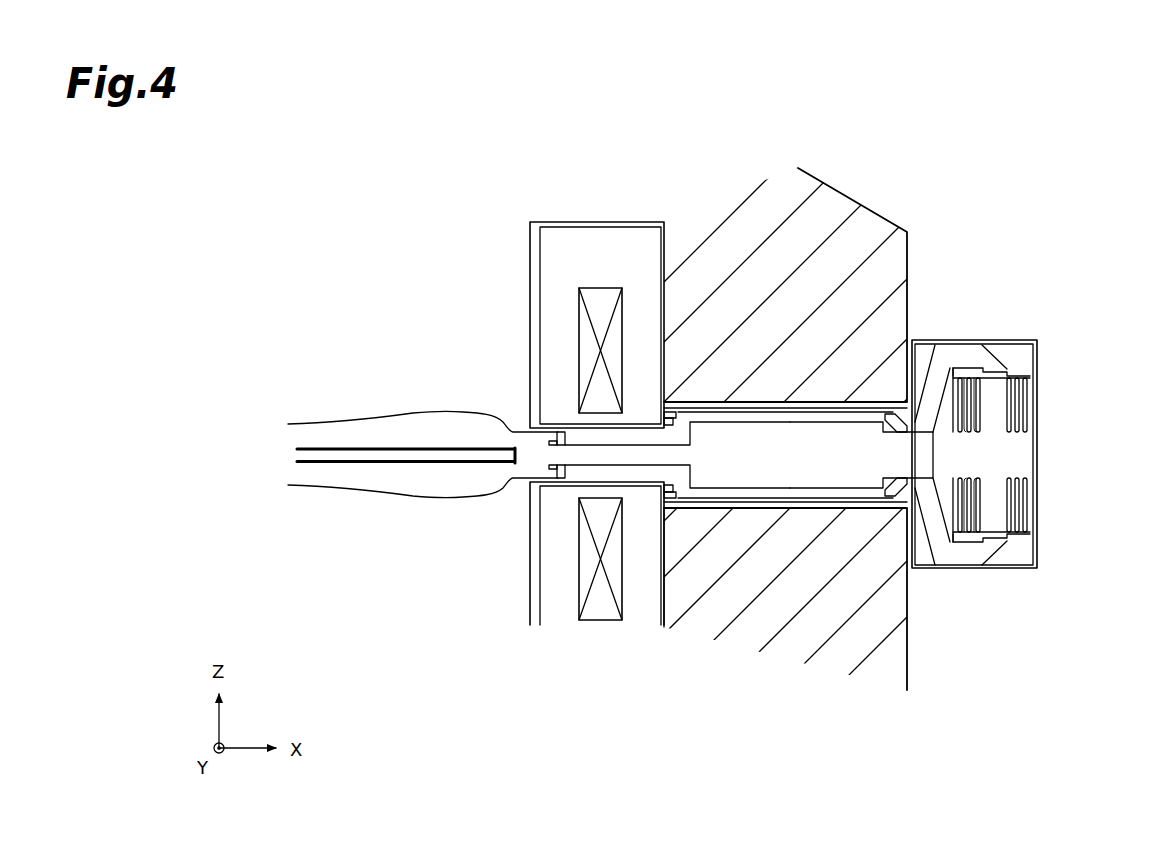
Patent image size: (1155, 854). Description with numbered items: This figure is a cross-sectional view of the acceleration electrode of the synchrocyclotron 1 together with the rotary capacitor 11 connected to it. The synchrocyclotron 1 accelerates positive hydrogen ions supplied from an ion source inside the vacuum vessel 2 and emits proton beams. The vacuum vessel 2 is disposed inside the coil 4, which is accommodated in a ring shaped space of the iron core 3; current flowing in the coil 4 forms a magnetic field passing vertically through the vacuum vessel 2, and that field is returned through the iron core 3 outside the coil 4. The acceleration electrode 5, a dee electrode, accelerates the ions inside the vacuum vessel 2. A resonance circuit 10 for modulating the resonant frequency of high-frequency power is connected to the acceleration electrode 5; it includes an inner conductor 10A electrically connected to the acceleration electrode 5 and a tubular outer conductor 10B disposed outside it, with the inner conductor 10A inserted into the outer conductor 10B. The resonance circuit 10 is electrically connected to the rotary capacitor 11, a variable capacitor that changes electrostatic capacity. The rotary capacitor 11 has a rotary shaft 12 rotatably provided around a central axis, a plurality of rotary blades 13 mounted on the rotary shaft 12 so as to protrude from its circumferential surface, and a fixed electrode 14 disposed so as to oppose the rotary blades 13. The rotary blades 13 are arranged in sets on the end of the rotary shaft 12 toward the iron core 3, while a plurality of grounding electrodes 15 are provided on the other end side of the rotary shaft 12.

The synchrocyclotron 1 is at (301, 168).
The vacuum vessel 2 is at (402, 411).
The iron core 3 is at (890, 262).
The coil 4 is at (600, 289).
The acceleration electrode 5 is at (403, 464).
The resonance circuit 10 is at (865, 724).
The inner conductor 10A is at (843, 510).
The outer conductor 10B is at (766, 510).
The rotary capacitor 11 is at (1048, 384).
The rotary shaft 12 is at (1013, 455).
The rotary blades 13 is at (973, 376).
The fixed electrode 14 is at (976, 549).
The grounding electrodes 15 is at (1013, 376).